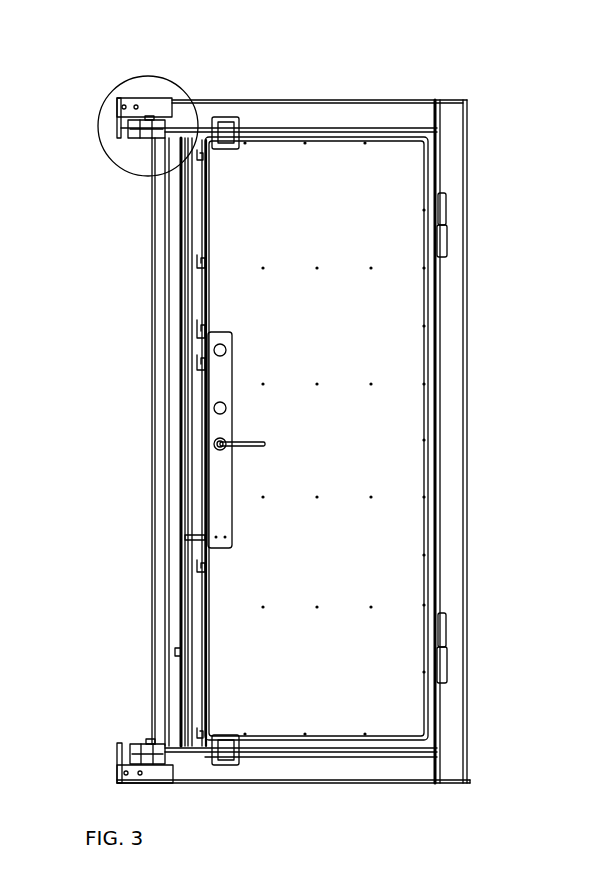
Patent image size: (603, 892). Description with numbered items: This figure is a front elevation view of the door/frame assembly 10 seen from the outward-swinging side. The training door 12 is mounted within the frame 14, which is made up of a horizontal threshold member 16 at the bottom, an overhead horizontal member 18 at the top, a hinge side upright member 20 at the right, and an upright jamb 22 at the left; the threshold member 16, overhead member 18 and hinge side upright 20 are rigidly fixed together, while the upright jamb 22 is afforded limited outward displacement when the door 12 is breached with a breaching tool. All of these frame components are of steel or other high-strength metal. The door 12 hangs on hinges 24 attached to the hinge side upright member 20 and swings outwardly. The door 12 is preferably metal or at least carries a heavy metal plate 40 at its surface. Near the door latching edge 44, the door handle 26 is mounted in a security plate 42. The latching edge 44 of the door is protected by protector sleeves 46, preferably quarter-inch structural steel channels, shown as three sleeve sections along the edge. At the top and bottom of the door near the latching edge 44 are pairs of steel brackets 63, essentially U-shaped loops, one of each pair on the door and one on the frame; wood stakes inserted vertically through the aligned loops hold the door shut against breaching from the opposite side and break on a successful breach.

The door/frame assembly 10 is at (413, 80).
The training door 12 is at (395, 357).
The frame 14 is at (475, 101).
The horizontal threshold member 16 is at (390, 778).
The overhead horizontal member 18 is at (290, 108).
The hinge side upright member 20 is at (455, 410).
The upright jamb 22 is at (157, 345).
The hinges 24 is at (447, 213).
The door handle 26 is at (253, 450).
The heavy metal plate 40 is at (340, 318).
The security plate 42 is at (220, 467).
The door latching edge 44 is at (188, 623).
The protector sleeves 46 is at (197, 262).
The steel brackets 63 is at (232, 105).